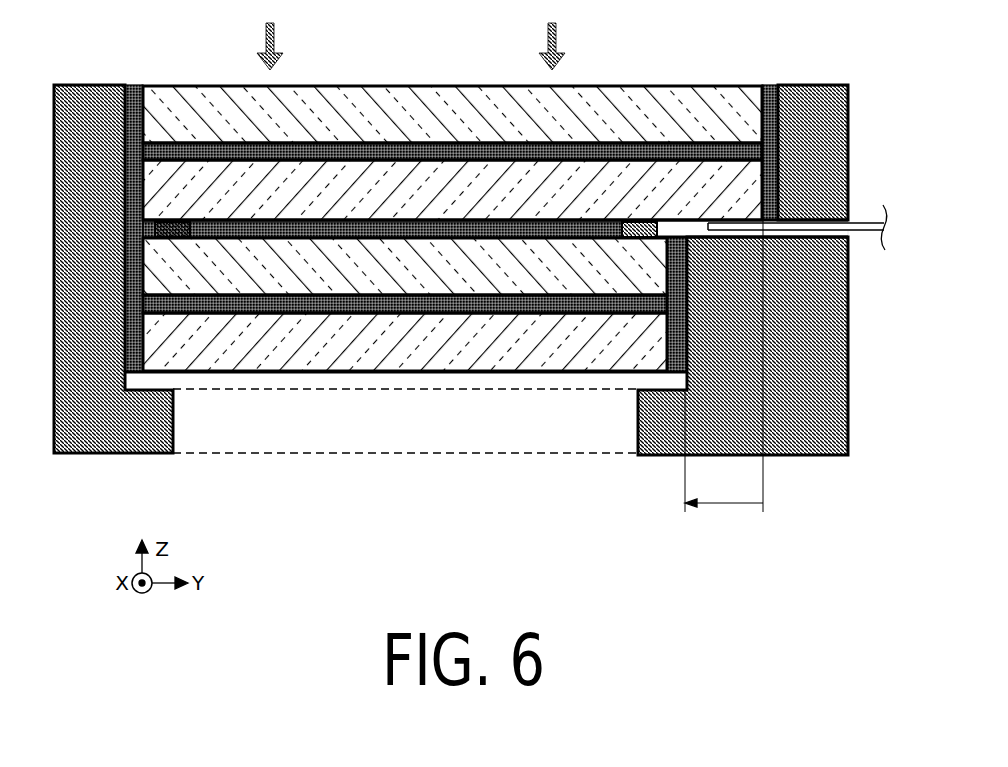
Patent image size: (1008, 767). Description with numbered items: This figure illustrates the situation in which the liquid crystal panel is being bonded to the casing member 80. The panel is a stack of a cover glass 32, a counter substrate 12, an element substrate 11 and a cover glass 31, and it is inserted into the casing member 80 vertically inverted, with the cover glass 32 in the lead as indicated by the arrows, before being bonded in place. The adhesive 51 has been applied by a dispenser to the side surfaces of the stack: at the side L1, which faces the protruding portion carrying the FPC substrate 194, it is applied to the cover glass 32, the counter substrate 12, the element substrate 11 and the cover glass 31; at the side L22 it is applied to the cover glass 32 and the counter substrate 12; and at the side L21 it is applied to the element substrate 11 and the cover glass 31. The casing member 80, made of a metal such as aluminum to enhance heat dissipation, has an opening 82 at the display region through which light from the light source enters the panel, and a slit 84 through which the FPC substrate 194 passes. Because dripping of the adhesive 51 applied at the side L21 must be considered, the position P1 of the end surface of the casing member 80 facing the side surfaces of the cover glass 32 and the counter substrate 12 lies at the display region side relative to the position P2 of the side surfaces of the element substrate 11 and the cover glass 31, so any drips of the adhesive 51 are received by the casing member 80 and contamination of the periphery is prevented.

The element substrate 11 is at (358, 178).
The counter substrate 12 is at (357, 282).
The cover glass 31 is at (430, 97).
The cover glass 32 is at (437, 350).
The adhesive 51 is at (135, 97).
The casing member 80 is at (80, 443).
The opening 82 is at (638, 422).
The slit 84 is at (864, 243).
The FPC substrate 194 is at (858, 222).
The position of end surface of casing member P1 is at (685, 465).
The position of side surfaces of element substrate and cover glass P2 is at (763, 313).
The side L1 is at (100, 358).
The side L21 is at (809, 110).
The side L22 is at (713, 360).